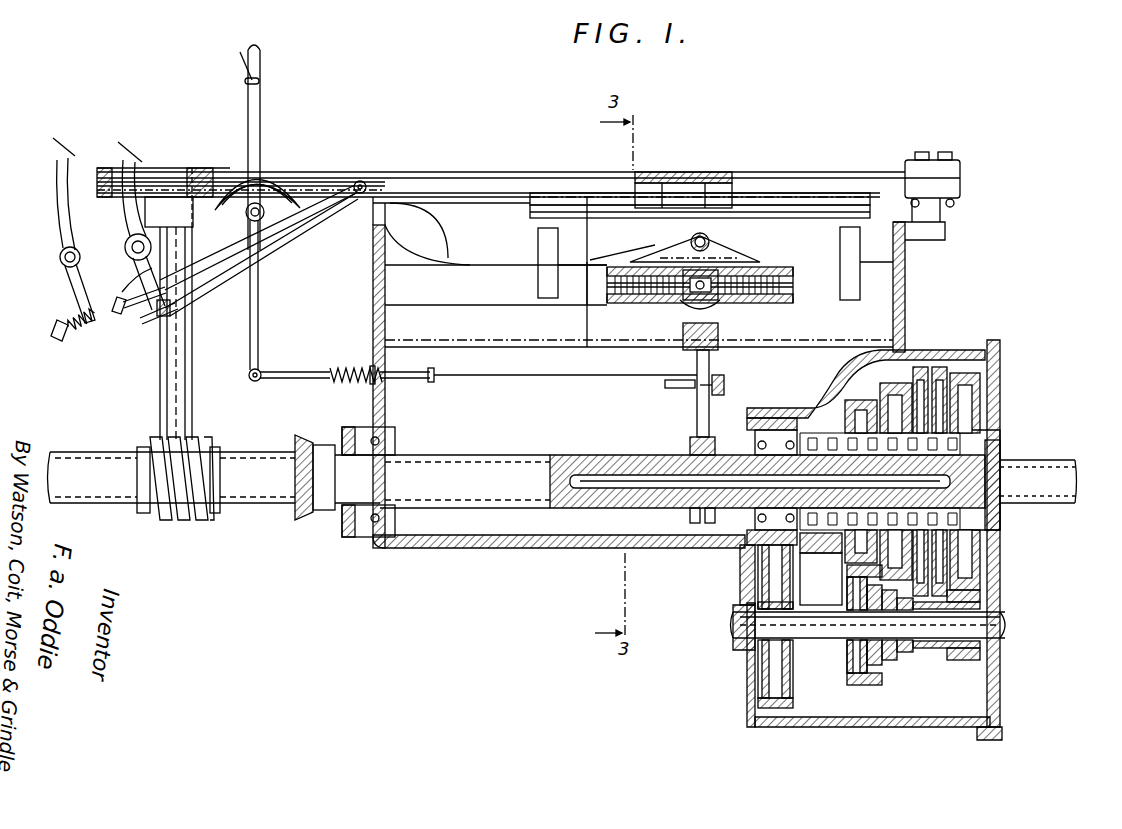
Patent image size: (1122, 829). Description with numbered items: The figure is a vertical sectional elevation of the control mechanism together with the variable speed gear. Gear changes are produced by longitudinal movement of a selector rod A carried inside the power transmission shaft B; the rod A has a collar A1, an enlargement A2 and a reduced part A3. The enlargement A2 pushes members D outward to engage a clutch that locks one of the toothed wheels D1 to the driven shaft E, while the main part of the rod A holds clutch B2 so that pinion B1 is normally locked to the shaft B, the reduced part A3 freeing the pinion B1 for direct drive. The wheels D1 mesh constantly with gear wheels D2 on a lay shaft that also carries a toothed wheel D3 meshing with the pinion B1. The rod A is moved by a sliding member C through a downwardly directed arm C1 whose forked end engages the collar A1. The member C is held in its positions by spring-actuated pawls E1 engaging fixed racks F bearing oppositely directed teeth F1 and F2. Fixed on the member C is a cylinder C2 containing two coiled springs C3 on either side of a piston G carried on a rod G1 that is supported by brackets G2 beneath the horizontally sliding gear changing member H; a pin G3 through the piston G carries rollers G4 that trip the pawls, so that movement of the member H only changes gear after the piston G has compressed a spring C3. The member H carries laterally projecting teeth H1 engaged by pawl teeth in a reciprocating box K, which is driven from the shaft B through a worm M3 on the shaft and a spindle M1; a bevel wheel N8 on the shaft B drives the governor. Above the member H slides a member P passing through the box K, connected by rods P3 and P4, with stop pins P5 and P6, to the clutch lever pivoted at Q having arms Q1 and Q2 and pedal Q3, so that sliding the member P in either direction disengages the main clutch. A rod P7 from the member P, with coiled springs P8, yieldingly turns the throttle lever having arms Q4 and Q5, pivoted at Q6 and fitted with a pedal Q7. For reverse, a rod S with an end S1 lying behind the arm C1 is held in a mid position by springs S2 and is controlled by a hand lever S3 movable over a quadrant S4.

The sliding member P is at (448, 185).
The rod P3 is at (185, 188).
The rod P4 is at (215, 272).
The stop pin P5 is at (145, 182).
The stop pin P6 is at (155, 320).
The rod P7 is at (198, 270).
The coiled springs P8 is at (75, 325).
The pivot of clutch lever Q is at (130, 255).
The clutch lever arm Q1 is at (128, 208).
The clutch lever arm Q2 is at (155, 300).
The pedal Q3 is at (128, 155).
The throttle lever arm Q4 is at (62, 228).
The throttle lever arm Q5 is at (75, 296).
The pivot of throttle lever Q6 is at (60, 259).
The pedal Q7 is at (66, 150).
The rod S is at (488, 378).
The end of rod S S1 is at (725, 380).
The springs S2 is at (398, 380).
The hand lever S3 is at (262, 104).
The quadrant S4 is at (285, 165).
The fixed racks F is at (385, 295).
The rack teeth F1 is at (800, 260).
The rack teeth F2 is at (580, 260).
The piston G is at (660, 305).
The rod G1 is at (585, 320).
The brackets G2 is at (548, 252).
The pin G3 is at (722, 303).
The rollers G4 is at (690, 303).
The gear changing member H is at (845, 215).
The teeth H1 is at (765, 200).
The box or casing K is at (702, 183).
The driven shaft E is at (760, 255).
The spring-actuated pawls E1 is at (650, 245).
The sliding member C is at (800, 310).
The arm C1 is at (697, 414).
The cylinder C2 is at (760, 320).
The coiled springs C3 is at (632, 303).
The spindle M1 is at (165, 398).
The worm M3 is at (185, 520).
The bevel wheel N8 is at (307, 527).
The power transmission shaft B is at (470, 490).
The pinion B1 is at (745, 580).
The clutch B2 is at (760, 540).
The selector rod A is at (735, 495).
The collar A1 is at (693, 523).
The enlargement A2 is at (1000, 450).
The reduced diameter part A3 is at (985, 530).
The clutch members D is at (930, 525).
The toothed wheels D1 is at (958, 372).
The gear wheels D2 is at (950, 662).
The toothed wheel D3 is at (780, 708).